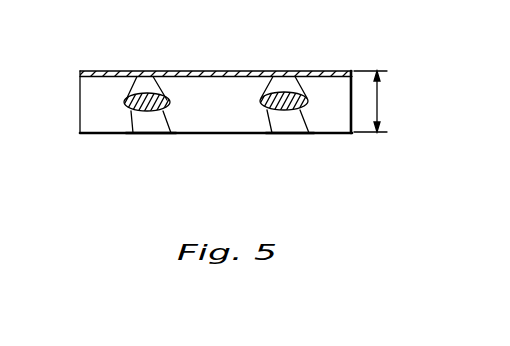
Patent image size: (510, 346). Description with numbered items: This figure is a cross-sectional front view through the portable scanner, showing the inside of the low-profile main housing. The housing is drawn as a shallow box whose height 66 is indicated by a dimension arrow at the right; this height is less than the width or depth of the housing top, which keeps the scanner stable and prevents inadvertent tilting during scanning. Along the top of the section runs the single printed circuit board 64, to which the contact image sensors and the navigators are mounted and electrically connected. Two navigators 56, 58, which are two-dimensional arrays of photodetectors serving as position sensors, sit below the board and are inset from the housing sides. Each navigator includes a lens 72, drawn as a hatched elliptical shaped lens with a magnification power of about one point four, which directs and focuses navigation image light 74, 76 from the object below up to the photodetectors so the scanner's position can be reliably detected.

The navigator 56 is at (143, 140).
The navigator 58 is at (285, 140).
The printed circuit board 64 is at (332, 72).
The height 66 is at (377, 100).
The lens 72 is at (123, 102).
The navigation image light 74 is at (171, 133).
The navigation image light 76 is at (163, 92).